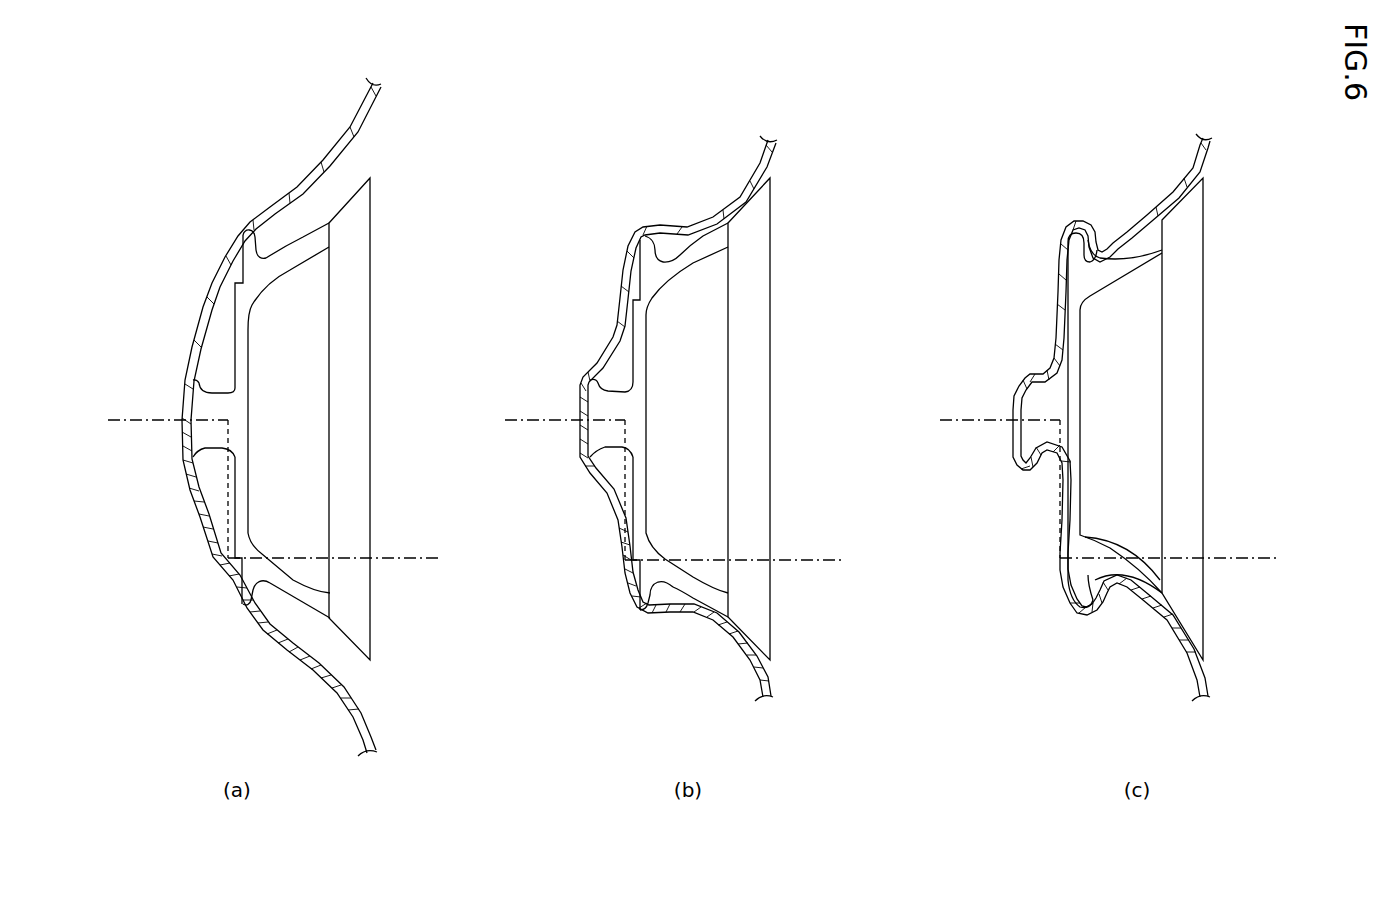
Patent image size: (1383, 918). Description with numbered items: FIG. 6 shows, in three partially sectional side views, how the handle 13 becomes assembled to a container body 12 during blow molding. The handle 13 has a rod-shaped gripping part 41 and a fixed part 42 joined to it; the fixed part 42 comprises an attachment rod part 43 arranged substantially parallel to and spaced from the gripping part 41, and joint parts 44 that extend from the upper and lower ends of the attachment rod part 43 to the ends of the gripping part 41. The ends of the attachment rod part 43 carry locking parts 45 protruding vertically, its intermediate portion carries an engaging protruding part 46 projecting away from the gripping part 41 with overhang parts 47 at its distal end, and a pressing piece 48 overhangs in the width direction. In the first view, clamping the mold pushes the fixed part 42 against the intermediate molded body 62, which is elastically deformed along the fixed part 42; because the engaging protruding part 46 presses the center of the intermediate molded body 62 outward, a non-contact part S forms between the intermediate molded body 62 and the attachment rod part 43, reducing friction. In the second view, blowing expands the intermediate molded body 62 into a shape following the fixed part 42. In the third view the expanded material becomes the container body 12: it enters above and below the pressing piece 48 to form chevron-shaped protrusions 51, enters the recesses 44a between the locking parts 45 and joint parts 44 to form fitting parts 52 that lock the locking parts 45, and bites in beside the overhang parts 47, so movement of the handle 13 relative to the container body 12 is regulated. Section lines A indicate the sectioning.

The container body 12 is at (1205, 690).
The handle 13 is at (375, 237).
The gripping part 41 is at (358, 308).
The fixed part 42 is at (234, 310).
The attachment rod part 43 is at (193, 520).
The joint part 44 is at (293, 245).
The recess 44a is at (1090, 262).
The locking part 45 is at (247, 233).
The engaging protruding part 46 is at (180, 433).
The overhang part 47 is at (232, 497).
The pressing piece 48 is at (240, 337).
The chevron-shaped protrusion 51 is at (1133, 288).
The fitting part 52 is at (1140, 265).
The intermediate molded body 62 is at (357, 693).
The non-contact part S is at (215, 363).
The section line A- A is at (1263, 552).